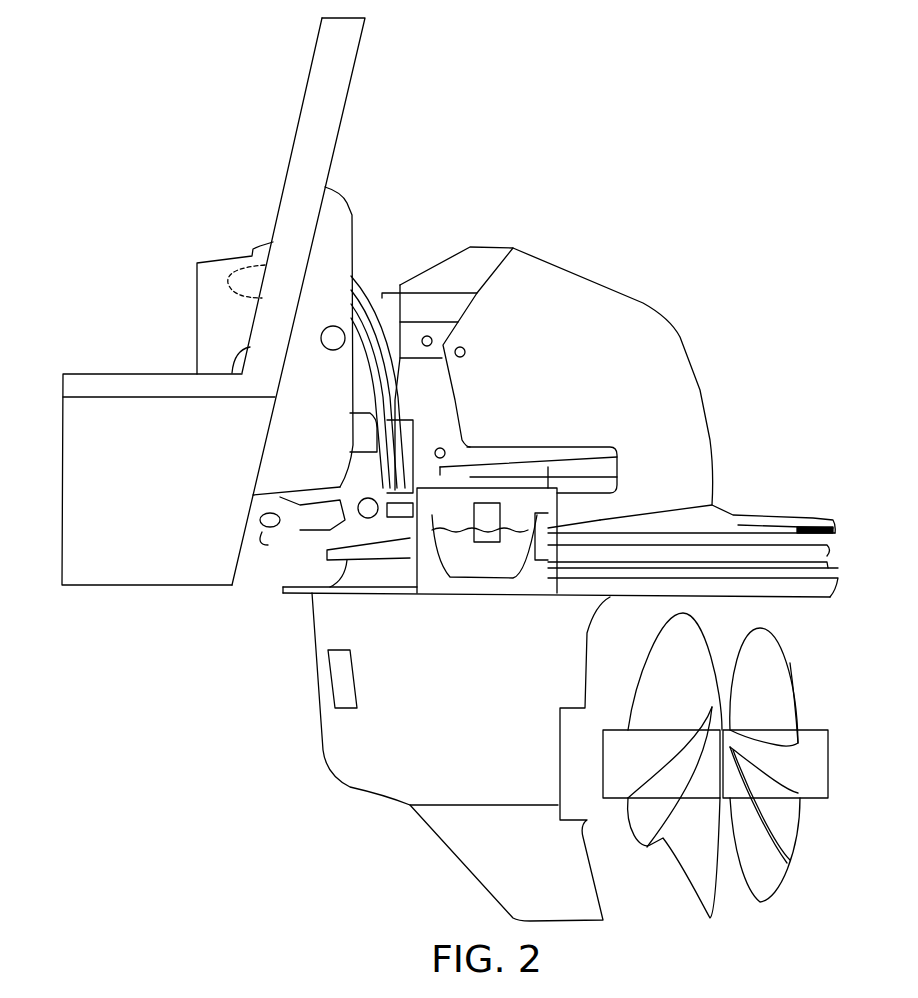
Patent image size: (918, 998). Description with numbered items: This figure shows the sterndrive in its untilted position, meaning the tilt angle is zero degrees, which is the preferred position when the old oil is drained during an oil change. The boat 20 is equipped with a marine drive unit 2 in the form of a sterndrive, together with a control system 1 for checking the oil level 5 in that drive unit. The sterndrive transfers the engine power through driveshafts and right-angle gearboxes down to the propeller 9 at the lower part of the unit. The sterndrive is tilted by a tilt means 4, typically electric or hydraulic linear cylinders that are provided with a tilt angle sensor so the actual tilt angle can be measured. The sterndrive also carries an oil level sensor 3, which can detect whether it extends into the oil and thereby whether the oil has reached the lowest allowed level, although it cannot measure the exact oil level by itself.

The control system 1 is at (399, 244).
The marine drive unit 2 is at (656, 357).
The oil level sensor 3 is at (487, 515).
The tilt means 4 is at (325, 520).
The oil level 5 is at (521, 530).
The propeller 9 is at (768, 658).
The boat 20 is at (323, 107).